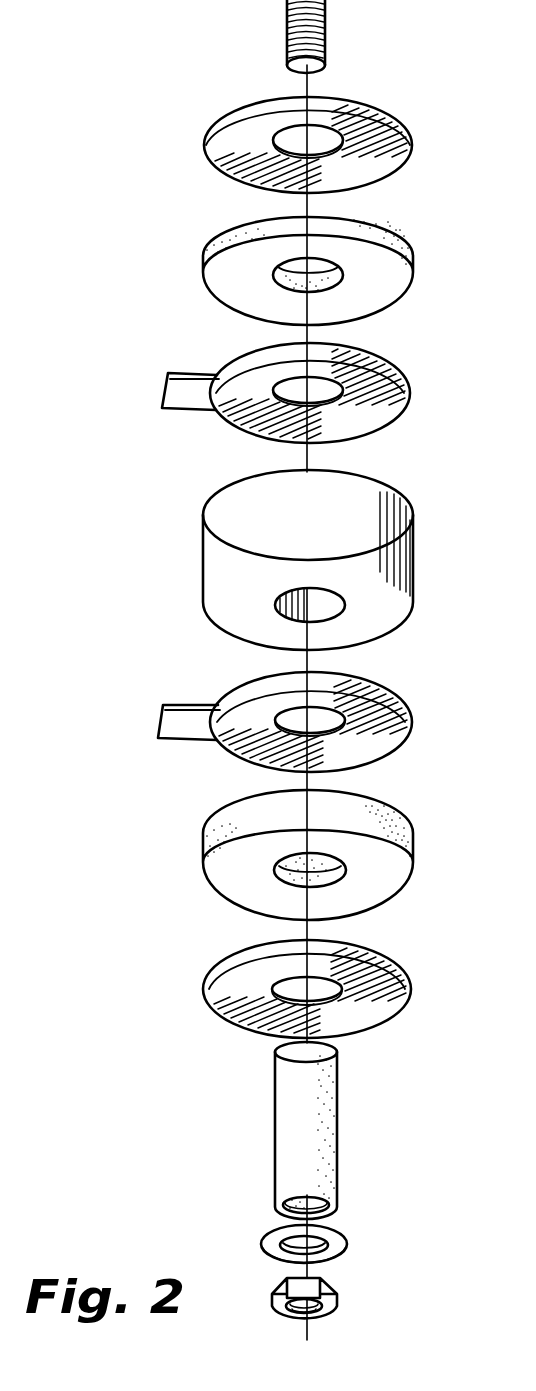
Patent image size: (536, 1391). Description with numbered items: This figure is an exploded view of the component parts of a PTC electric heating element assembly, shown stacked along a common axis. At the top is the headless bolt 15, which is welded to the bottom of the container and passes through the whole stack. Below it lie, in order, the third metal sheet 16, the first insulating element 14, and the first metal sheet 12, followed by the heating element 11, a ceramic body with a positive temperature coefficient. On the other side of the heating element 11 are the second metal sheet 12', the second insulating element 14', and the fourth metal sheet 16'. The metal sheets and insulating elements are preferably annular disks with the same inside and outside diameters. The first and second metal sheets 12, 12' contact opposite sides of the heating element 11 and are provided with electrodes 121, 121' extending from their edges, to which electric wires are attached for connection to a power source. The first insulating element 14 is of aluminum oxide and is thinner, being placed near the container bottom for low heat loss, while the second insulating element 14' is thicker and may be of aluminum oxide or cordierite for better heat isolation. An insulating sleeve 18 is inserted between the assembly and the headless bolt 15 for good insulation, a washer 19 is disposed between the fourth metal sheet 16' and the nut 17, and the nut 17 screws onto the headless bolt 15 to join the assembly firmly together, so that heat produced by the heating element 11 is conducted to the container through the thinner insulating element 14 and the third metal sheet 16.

The headless bolt 15 is at (325, 20).
The third metal sheet 16 is at (343, 145).
The first insulating element 14 is at (342, 271).
The first metal sheet 12 is at (277, 393).
The electrode 121 is at (145, 391).
The heating element 11 is at (413, 566).
The second metal sheet 12' is at (269, 722).
The electrode 121' is at (132, 720).
The second insulating element 14' is at (350, 855).
The fourth metal sheet 16' is at (354, 989).
The insulating sleeve 18 is at (340, 1130).
The washer 19 is at (348, 1242).
The nut 17 is at (338, 1302).